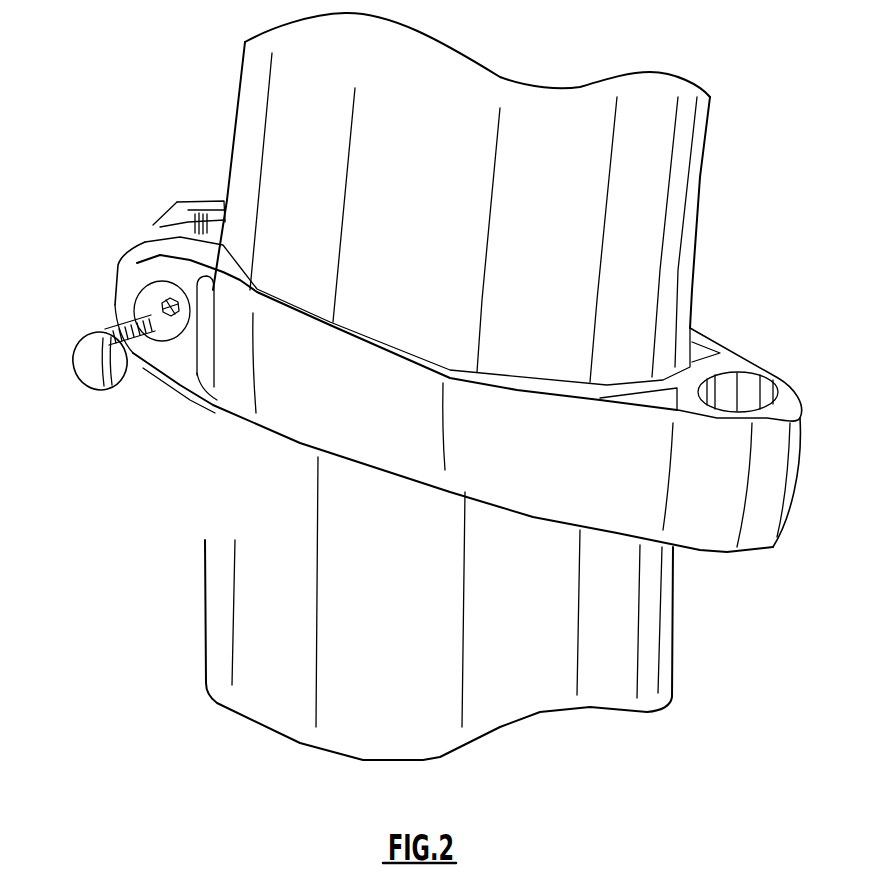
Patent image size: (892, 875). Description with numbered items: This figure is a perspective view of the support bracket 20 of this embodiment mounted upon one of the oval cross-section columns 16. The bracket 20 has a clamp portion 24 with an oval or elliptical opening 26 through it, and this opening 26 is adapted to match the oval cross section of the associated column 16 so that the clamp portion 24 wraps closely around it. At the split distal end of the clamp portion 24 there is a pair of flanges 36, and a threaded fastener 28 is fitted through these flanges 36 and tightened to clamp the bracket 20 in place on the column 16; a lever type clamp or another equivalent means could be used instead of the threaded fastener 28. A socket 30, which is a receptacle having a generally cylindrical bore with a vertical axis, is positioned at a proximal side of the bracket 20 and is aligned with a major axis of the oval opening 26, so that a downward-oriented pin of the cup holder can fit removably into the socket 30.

The column 16 is at (695, 123).
The bracket 20 is at (479, 346).
The clamp portion 24 is at (318, 433).
The oval opening 26 is at (393, 351).
The threaded fastener 28 is at (100, 330).
The socket 30 is at (777, 380).
The flanges 36 is at (177, 198).